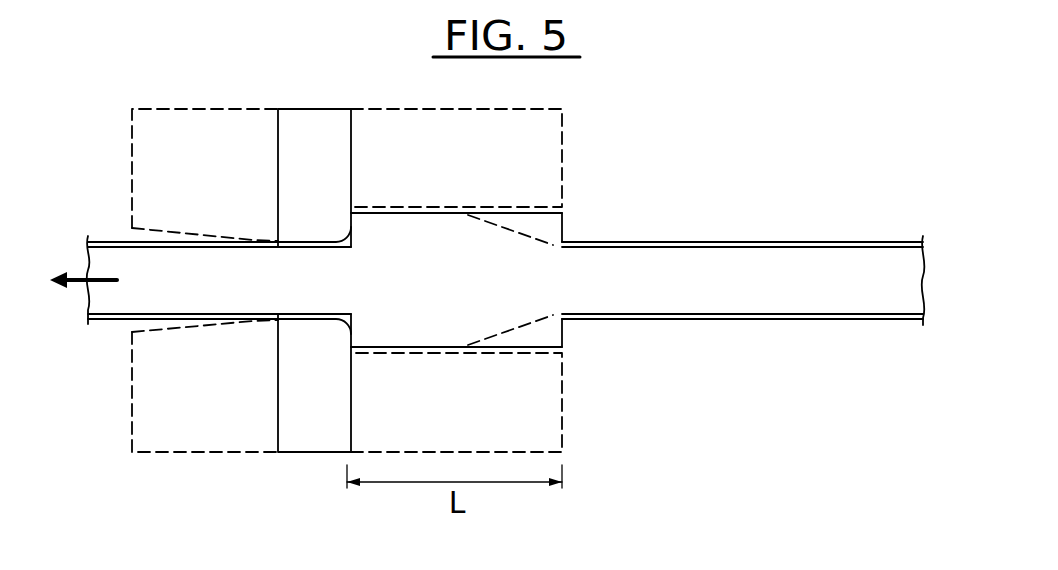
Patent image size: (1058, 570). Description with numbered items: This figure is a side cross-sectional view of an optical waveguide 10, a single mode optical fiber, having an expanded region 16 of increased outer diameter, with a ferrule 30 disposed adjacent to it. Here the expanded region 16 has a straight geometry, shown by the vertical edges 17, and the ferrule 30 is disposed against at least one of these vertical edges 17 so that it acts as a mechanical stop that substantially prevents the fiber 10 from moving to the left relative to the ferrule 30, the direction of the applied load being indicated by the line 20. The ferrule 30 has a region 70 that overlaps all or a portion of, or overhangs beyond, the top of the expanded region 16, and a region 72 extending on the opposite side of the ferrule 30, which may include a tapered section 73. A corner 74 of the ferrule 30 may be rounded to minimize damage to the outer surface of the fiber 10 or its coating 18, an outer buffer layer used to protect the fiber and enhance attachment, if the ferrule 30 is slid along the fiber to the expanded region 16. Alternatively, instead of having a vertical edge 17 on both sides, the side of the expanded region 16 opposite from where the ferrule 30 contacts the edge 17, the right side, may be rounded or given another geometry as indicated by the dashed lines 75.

The optical waveguide 10 is at (102, 232).
The expanded region 16 is at (428, 222).
The vertical edges 17 is at (352, 233).
The buffer layer 18 is at (127, 242).
The line 20 is at (84, 290).
The ferrule 30 is at (302, 95).
The region 70 is at (439, 176).
The region 72 is at (170, 171).
The tapered section 73 is at (204, 238).
The corner 74 is at (343, 234).
The dashed lines 75 is at (520, 243).